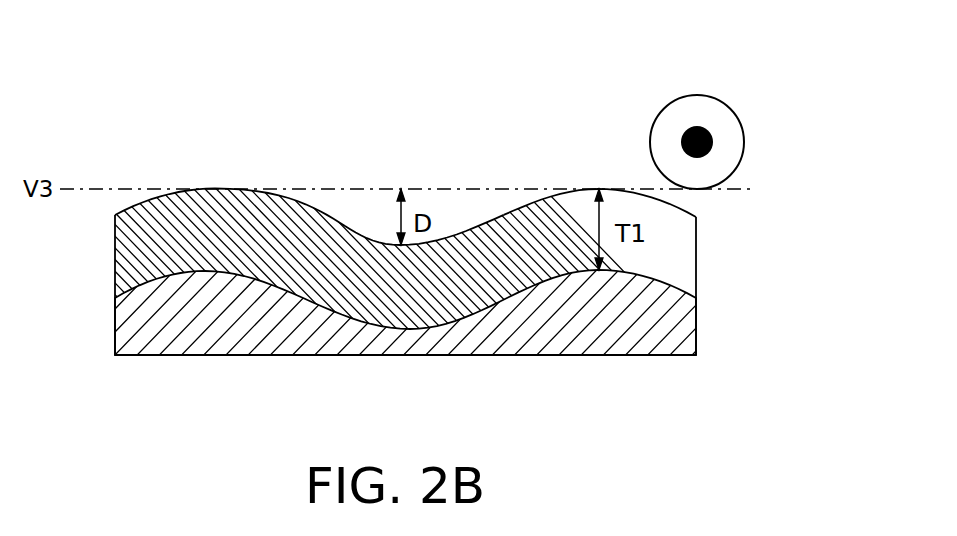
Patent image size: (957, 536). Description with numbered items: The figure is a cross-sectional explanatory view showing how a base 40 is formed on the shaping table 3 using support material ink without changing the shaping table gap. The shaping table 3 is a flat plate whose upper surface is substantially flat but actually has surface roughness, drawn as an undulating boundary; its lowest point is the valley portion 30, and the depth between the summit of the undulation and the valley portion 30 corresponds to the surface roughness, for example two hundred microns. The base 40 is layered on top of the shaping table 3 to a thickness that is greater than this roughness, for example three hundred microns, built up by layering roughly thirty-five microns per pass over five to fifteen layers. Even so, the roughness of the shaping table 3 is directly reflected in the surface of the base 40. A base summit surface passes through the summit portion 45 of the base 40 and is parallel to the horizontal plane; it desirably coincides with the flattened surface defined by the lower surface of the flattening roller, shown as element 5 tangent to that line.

The shaping table 3 is at (216, 349).
The nozzle 5 is at (723, 90).
The valley portion 30 is at (353, 230).
The base 40 is at (197, 203).
The summit portion of the base 45 is at (598, 190).